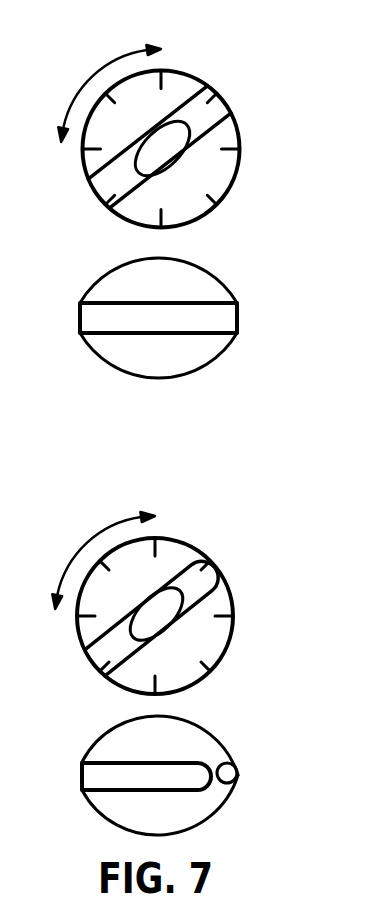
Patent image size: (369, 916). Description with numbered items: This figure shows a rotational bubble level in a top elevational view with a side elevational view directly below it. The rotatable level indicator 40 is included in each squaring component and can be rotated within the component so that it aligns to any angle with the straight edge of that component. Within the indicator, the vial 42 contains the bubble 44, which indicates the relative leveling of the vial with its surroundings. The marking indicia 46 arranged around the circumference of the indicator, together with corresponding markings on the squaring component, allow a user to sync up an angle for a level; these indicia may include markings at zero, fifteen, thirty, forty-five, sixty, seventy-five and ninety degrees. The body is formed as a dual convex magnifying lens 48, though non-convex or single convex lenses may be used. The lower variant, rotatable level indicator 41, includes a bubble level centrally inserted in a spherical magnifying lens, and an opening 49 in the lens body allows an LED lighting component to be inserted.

The rotatable level indicator 40 is at (145, 423).
The rotatable level indicator 41 is at (215, 524).
The vial 42 is at (107, 183).
The bubble 44 is at (157, 152).
The marking indicia 46 is at (234, 142).
The dual convex magnifying lens 48 is at (205, 295).
The opening 49 is at (230, 772).